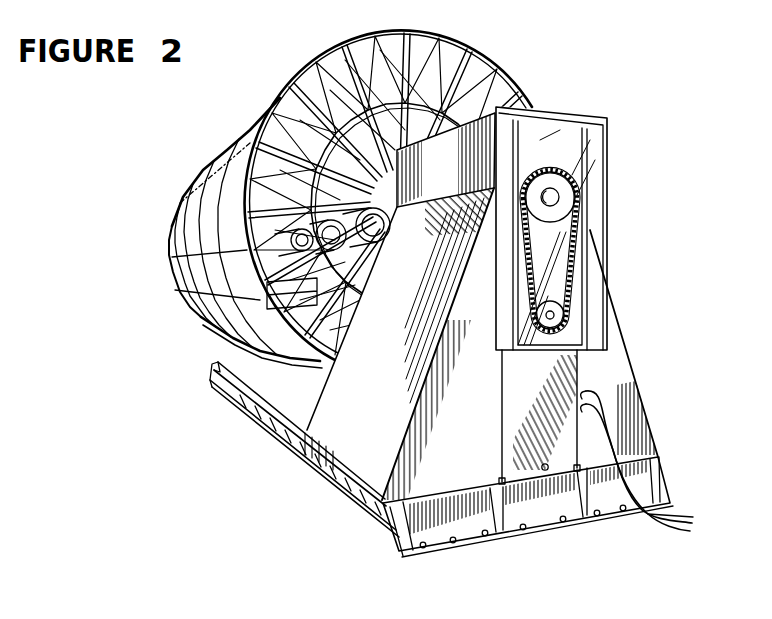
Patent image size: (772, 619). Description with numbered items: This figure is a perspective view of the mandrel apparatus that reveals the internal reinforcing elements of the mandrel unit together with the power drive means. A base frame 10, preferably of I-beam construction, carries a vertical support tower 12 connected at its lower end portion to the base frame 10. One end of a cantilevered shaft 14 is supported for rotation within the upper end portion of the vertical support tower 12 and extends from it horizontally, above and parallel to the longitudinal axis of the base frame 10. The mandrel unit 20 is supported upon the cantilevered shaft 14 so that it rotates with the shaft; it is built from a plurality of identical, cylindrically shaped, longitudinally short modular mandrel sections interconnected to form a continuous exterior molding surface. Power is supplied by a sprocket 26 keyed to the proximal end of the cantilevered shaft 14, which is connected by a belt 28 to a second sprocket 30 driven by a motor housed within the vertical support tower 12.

The base frame 10 is at (297, 440).
The vertical support tower 12 is at (401, 364).
The cantilevered shaft 14 is at (378, 230).
The mandrel unit 20 is at (174, 290).
The sprocket 26 is at (565, 202).
The belt 28 is at (570, 265).
The second sprocket 30 is at (558, 315).